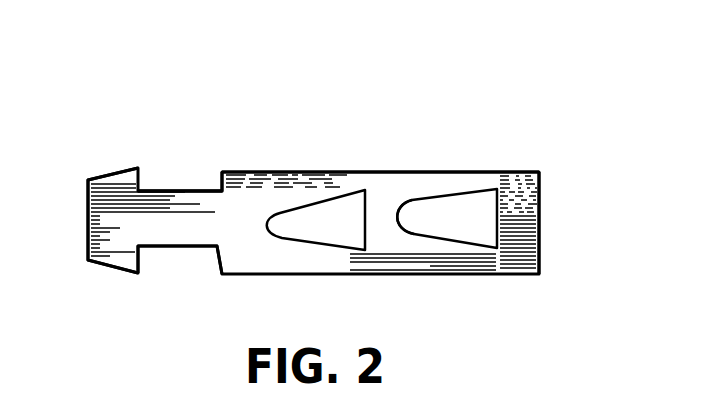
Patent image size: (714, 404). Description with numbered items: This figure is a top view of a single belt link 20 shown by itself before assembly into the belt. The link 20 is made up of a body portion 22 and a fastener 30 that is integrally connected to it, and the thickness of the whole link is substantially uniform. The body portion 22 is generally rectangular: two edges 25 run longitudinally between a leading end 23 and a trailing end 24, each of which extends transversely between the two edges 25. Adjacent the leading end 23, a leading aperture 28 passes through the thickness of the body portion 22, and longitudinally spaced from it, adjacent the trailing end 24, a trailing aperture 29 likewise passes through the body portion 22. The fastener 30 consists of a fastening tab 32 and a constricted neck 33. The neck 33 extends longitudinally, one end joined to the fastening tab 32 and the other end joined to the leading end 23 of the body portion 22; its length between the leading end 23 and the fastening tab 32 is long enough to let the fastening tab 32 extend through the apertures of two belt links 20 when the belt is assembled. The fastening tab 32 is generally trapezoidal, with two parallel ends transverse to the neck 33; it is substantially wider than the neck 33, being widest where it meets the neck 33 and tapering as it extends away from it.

The belt link 20 is at (506, 164).
The body portion 22 is at (388, 220).
The leading end 23 is at (228, 185).
The trailing end 24 is at (540, 231).
The edges 25 is at (327, 172).
The leading aperture 28 is at (322, 228).
The trailing aperture 29 is at (452, 217).
The fastener 30 is at (185, 248).
The fastening tab 32 is at (112, 244).
The neck 33 is at (172, 210).